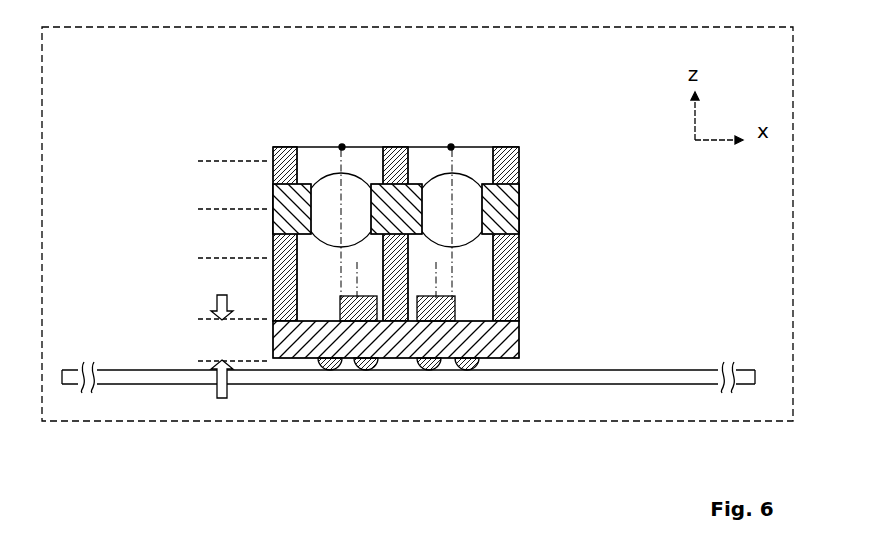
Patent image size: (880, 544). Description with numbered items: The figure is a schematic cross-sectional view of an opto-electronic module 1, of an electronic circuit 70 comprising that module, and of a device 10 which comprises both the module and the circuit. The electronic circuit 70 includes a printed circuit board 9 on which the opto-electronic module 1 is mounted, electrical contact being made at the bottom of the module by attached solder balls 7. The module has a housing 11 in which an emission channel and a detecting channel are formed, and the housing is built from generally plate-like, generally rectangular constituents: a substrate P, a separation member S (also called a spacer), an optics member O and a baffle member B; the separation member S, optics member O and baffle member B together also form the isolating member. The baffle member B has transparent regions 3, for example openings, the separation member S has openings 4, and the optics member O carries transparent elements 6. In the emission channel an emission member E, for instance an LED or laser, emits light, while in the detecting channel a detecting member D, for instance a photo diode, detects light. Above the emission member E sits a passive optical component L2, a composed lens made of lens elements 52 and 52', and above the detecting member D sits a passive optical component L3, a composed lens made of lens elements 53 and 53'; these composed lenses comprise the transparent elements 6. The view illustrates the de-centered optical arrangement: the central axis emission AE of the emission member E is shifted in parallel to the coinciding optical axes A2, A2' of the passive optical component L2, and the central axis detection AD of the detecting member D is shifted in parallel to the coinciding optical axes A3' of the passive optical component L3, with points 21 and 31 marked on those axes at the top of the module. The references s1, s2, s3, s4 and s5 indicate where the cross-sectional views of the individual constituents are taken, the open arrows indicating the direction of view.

The opto-electronic module 1 is at (213, 97).
The transparent region 3 is at (303, 153).
The opening 4 is at (519, 262).
The transparent element 6 is at (434, 192).
The solder balls 7 is at (370, 362).
The printed circuit board 9 is at (692, 370).
The device 10 is at (763, 422).
The housing 11 is at (519, 158).
The emitter / aperture point 21 is at (343, 144).
The emitter / aperture point 31 is at (452, 144).
The lens element 52 is at (296, 205).
The lens element 52' is at (276, 233).
The lens element 53 is at (458, 162).
The lens element 53' is at (511, 151).
The electronic circuit 70 is at (680, 312).
The optical axis A2 is at (364, 199).
The optical axis A2' is at (325, 281).
The optical axis A3' is at (541, 225).
The central axis detection AD is at (478, 278).
The central axis emission AE is at (353, 279).
The baffle member B is at (519, 172).
The detecting member D is at (478, 335).
The emission member E is at (333, 362).
The passive optical component L2 is at (329, 156).
The passive optical component L3 is at (443, 156).
The optics member O is at (519, 204).
The substrate P is at (519, 340).
The separation member S is at (437, 277).
The view reference s1 is at (203, 159).
The view reference s2 is at (203, 207).
The view reference s3 is at (203, 256).
The view reference s4 is at (203, 314).
The view reference s5 is at (203, 354).